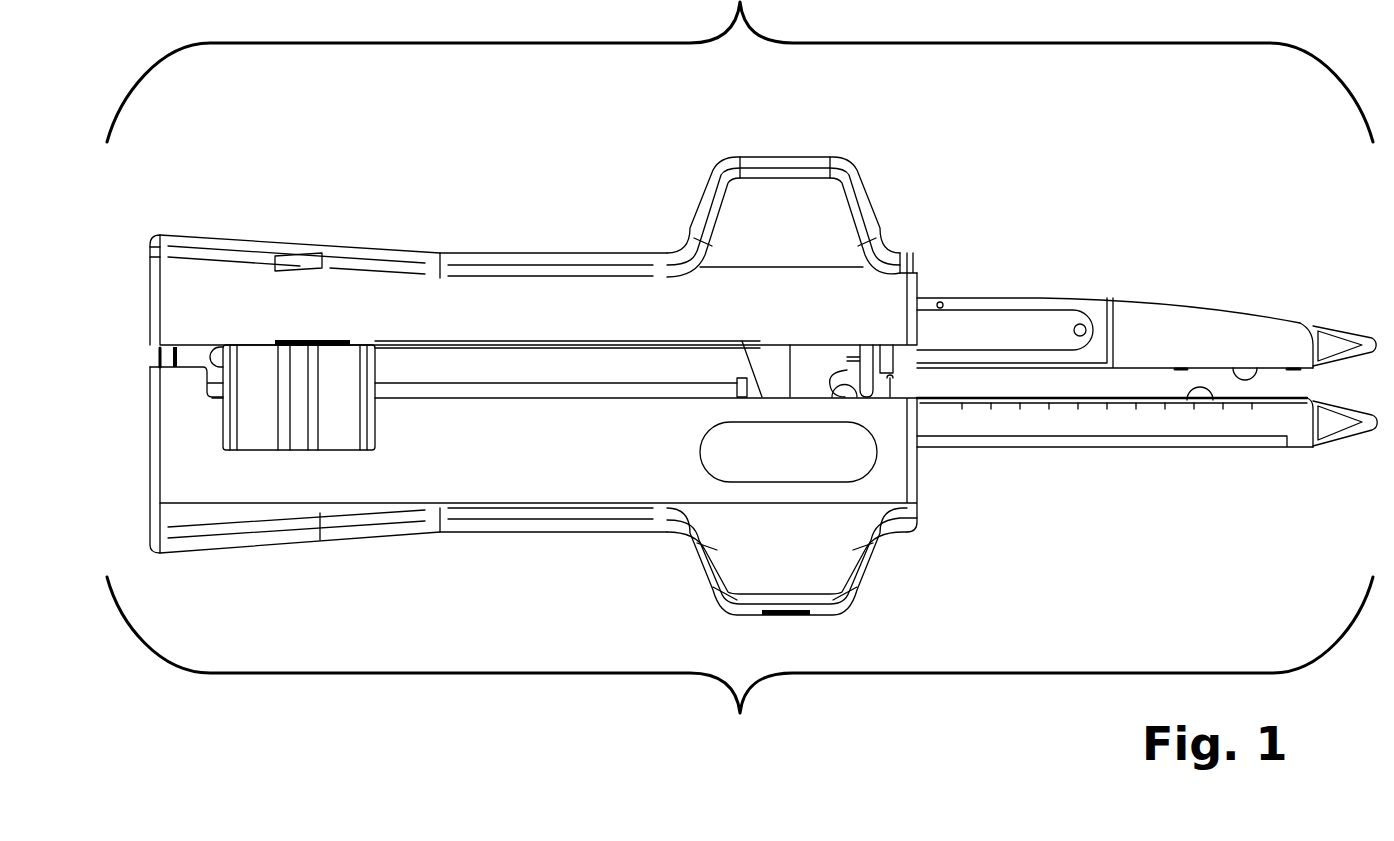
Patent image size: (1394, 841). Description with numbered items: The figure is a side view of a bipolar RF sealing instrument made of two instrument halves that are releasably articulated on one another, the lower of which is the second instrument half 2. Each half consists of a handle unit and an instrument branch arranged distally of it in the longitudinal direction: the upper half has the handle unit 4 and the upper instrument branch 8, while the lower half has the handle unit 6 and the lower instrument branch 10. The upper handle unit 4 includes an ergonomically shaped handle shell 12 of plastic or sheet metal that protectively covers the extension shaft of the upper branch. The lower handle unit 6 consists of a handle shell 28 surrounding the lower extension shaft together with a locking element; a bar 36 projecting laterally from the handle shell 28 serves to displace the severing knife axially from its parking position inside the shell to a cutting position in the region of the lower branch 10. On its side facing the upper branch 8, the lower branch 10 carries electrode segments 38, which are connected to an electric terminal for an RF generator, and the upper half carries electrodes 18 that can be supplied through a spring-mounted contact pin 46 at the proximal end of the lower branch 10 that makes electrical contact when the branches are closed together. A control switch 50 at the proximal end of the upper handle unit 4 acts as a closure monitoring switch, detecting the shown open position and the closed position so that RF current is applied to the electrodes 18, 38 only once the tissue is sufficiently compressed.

The second instrument half 2 is at (740, 379).
The handle unit 4 is at (626, 212).
The handle unit 6 is at (575, 556).
The instrument branch 8 is at (1167, 280).
The instrument branch 10 is at (1126, 468).
The handle shell 12 is at (501, 290).
The electrode 18 is at (1262, 367).
The handle shell 28 is at (418, 484).
The bar 36 is at (262, 428).
The electrode segments 38 is at (1213, 400).
The contact pin 46 is at (900, 388).
The control switch 50 is at (147, 357).